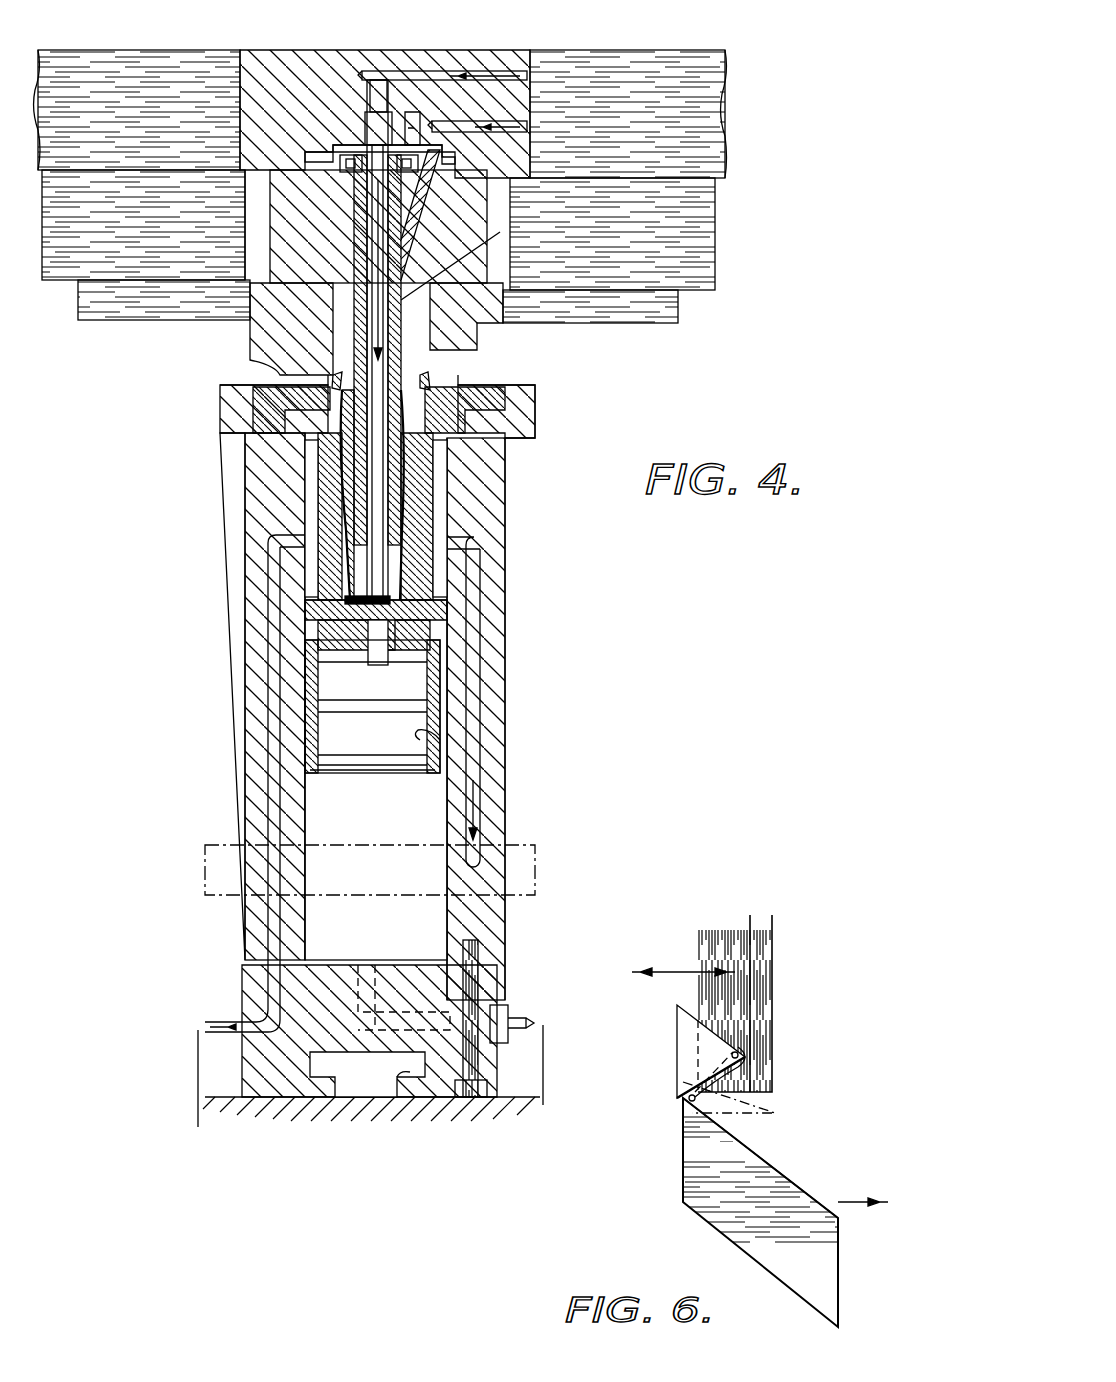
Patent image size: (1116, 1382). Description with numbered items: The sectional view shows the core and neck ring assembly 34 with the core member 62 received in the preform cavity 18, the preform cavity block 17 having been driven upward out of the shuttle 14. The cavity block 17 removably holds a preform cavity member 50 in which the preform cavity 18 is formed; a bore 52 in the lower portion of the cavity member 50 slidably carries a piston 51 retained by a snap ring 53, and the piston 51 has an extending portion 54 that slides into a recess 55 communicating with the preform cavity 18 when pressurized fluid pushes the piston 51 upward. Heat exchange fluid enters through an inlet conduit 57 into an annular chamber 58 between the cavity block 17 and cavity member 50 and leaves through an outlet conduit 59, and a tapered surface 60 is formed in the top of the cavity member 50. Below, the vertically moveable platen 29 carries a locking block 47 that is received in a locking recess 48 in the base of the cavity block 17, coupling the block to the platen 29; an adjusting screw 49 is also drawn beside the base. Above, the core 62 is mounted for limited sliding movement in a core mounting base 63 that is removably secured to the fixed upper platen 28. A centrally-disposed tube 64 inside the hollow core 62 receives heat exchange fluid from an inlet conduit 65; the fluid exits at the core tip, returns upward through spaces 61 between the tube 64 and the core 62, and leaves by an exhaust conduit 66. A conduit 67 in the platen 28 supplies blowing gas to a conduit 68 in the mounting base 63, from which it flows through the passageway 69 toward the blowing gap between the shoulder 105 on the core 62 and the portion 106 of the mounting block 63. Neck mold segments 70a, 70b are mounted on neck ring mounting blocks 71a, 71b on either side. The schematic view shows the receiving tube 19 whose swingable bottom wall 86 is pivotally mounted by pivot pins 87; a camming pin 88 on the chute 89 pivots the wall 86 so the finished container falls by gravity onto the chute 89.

In FIG. 4, the shuttle 14 is at (215, 845).
In FIG. 4, the preform cavity block 17 is at (245, 578).
In FIG. 4, the preform cavity 18 is at (312, 512).
In FIG. 6, the receiving tube 19 is at (772, 1010).
In FIG. 4, the fixed upper platen 28 is at (728, 130).
In FIG. 4, the vertically moveable platen 29 is at (270, 1110).
In FIG. 4, the core and neck ring assembly 34 is at (490, 360).
In FIG. 4, the locking block 47 is at (352, 1067).
In FIG. 4, the locking recess 48 is at (395, 1085).
In FIG. 4, the adjusting screw 49 is at (494, 1018).
In FIG. 4, the preform cavity member 50 is at (420, 590).
In FIG. 4, the piston 51 is at (330, 678).
In FIG. 4, the bore 52 is at (430, 758).
In FIG. 4, the snap ring 53 is at (435, 762).
In FIG. 4, the extending portion 54 is at (375, 640).
In FIG. 4, the recess 55 is at (350, 605).
In FIG. 4, the inlet conduit 57 is at (268, 720).
In FIG. 4, the annular chamber 58 is at (305, 510).
In FIG. 4, the outlet conduit 59 is at (483, 683).
In FIG. 4, the tapered surface 60 is at (455, 385).
In FIG. 4, the spaces 61 is at (372, 492).
In FIG. 4, the core member 62 is at (405, 495).
In FIG. 4, the core mounting base 63 is at (478, 188).
In FIG. 4, the centrally-disposed tube 64 is at (378, 245).
In FIG. 4, the inlet conduit 65 is at (397, 76).
In FIG. 4, the exhaust conduit 66 is at (406, 120).
In FIG. 4, the conduit 67 is at (515, 125).
In FIG. 4, the conduit 68 is at (420, 200).
In FIG. 4, the passageway 69 is at (404, 285).
In FIG. 4, the neck mold segment 70a is at (280, 345).
In FIG. 4, the neck mold segment 70b is at (478, 333).
In FIG. 4, the neck ring mounting block 71a is at (52, 272).
In FIG. 4, the neck ring mounting block 71b is at (715, 243).
In FIG. 6, the swingable bottom wall 86 is at (677, 1048).
In FIG. 6, the pivot pins 87 is at (740, 1053).
In FIG. 6, the pin 88 is at (690, 1102).
In FIG. 6, the chute 89 is at (683, 1178).
In FIG. 4, the shoulder 105 is at (340, 440).
In FIG. 4, the portion 106 is at (330, 380).